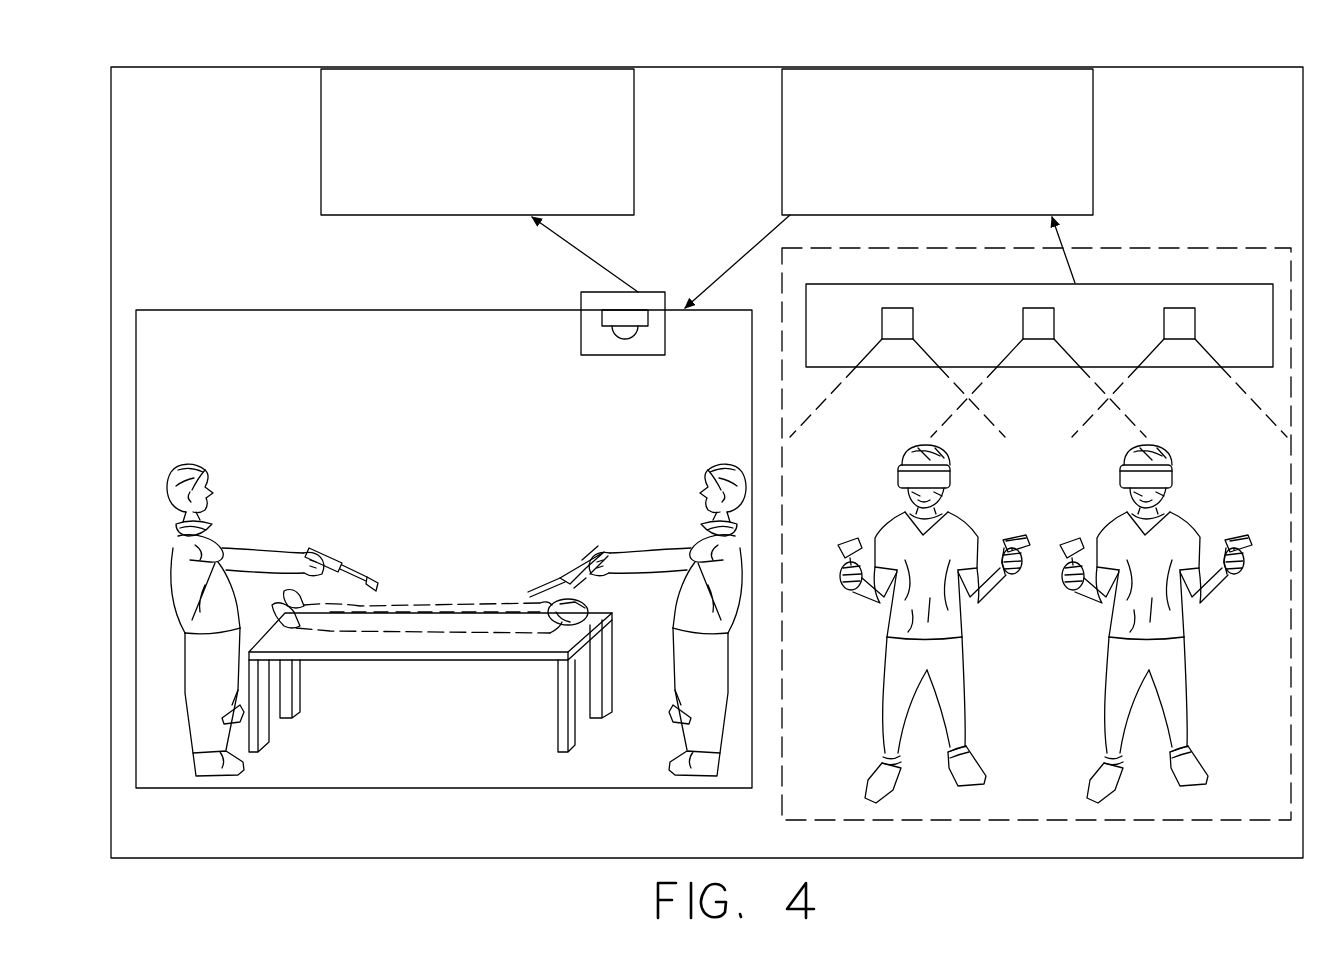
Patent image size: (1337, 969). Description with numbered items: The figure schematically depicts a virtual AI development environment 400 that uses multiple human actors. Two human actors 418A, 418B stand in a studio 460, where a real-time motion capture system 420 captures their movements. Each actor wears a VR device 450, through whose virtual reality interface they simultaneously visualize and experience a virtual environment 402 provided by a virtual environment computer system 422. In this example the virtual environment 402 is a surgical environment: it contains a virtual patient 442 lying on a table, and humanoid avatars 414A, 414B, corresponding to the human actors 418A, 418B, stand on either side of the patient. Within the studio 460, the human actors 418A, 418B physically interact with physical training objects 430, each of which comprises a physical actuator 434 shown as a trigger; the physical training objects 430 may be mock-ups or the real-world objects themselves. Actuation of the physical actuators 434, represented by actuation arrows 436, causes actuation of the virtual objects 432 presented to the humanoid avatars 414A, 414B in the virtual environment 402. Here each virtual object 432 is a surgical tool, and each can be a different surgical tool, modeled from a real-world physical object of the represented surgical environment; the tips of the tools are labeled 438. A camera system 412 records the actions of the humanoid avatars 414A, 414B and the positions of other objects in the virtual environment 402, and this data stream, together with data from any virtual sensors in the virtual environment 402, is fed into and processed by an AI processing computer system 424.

The virtual AI development environment 400 is at (1214, 64).
The virtual environment 402 is at (303, 295).
The camera system 412 is at (580, 320).
The humanoid avatar 414A is at (167, 455).
The humanoid avatar 414B is at (698, 455).
The human actor 418A is at (895, 458).
The human actor 418B is at (1115, 466).
The real-time motion capture system 420 is at (1000, 284).
The virtual environment computer system 422 is at (782, 128).
The AI processing computer system 424 is at (321, 117).
The physical training object 430 is at (1025, 512).
The virtual object 432 is at (295, 535).
The physical actuator 434 is at (1030, 560).
The actuation arrow 436 is at (1018, 612).
The instrument tip 438 is at (387, 578).
The virtual patient 442 is at (440, 612).
The VR device 450 is at (950, 487).
The studio 460 is at (1225, 248).